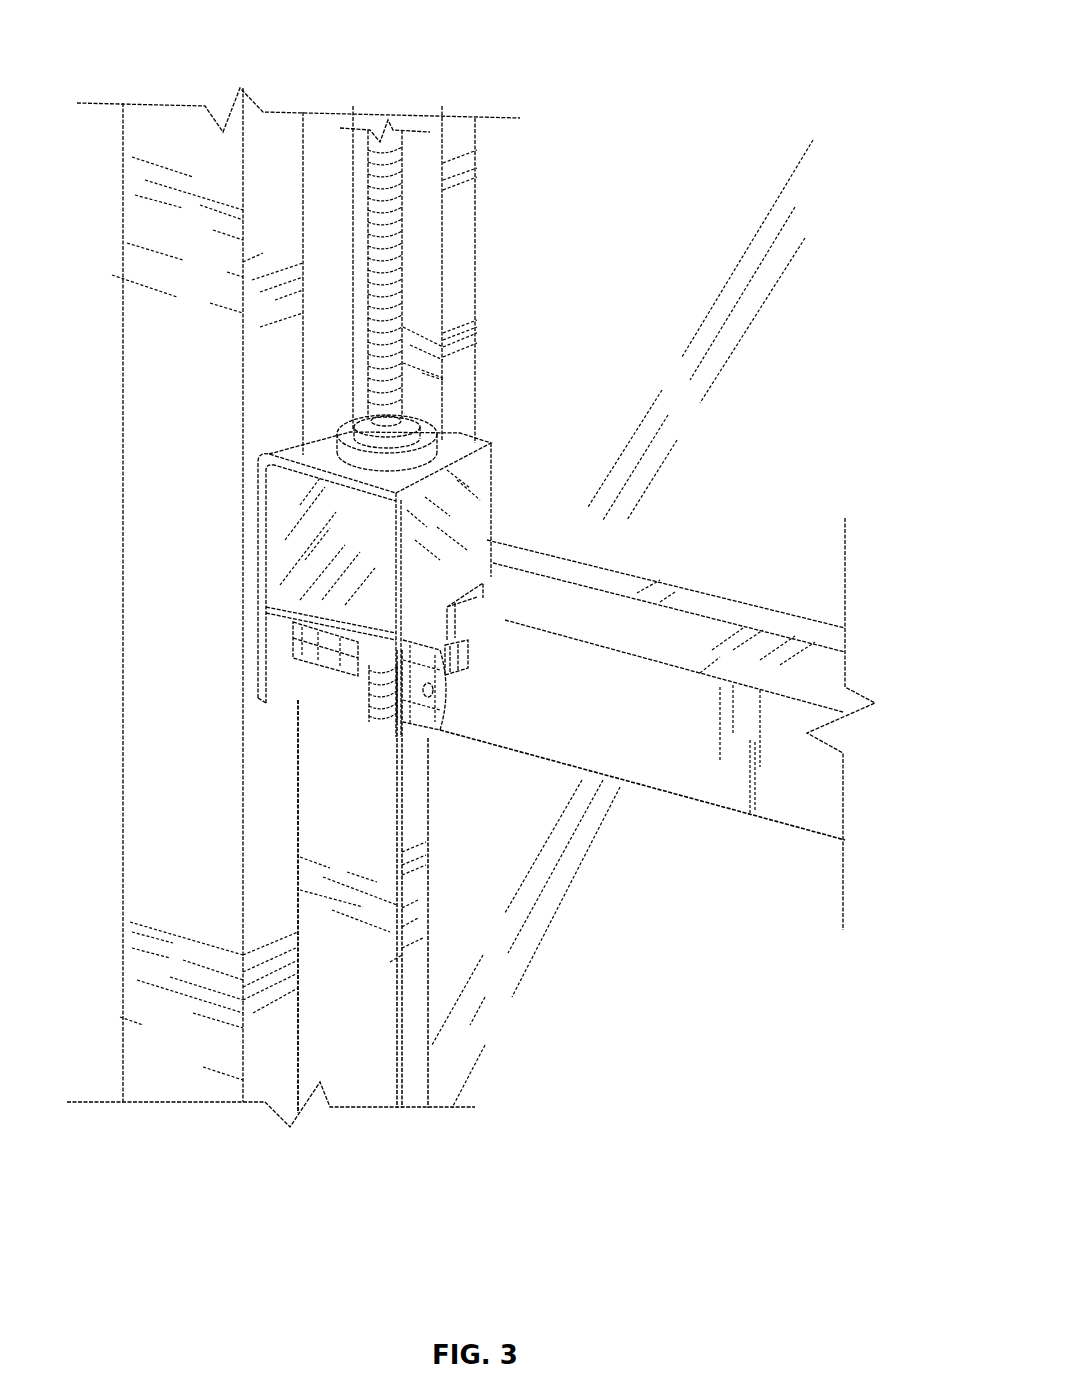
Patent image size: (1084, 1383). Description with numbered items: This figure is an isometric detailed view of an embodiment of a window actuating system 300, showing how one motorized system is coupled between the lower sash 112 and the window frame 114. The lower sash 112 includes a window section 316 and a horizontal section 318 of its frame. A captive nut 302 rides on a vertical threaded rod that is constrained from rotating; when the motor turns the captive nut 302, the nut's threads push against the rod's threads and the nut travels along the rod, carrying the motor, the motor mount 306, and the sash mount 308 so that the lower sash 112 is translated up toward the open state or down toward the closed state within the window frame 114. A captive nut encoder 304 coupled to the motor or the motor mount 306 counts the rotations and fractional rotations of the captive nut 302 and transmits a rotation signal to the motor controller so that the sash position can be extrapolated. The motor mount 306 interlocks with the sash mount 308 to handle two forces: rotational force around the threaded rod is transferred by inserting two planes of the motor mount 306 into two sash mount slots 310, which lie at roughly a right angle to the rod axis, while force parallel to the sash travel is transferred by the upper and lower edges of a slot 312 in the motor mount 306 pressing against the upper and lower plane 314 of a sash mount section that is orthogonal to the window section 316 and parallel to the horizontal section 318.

The window actuating system 300 is at (870, 69).
The lower sash 112 is at (696, 769).
The window frame 114 is at (158, 633).
The captive nut 302 is at (403, 428).
The captive nut encoder 304 is at (417, 453).
The motor mount 306 is at (468, 498).
The sash mount 308 is at (433, 652).
The sash mount slots 310 is at (447, 637).
The slot 312 is at (426, 652).
The plane 314 is at (447, 647).
The window section 316 is at (607, 878).
The horizontal section 318 is at (653, 627).